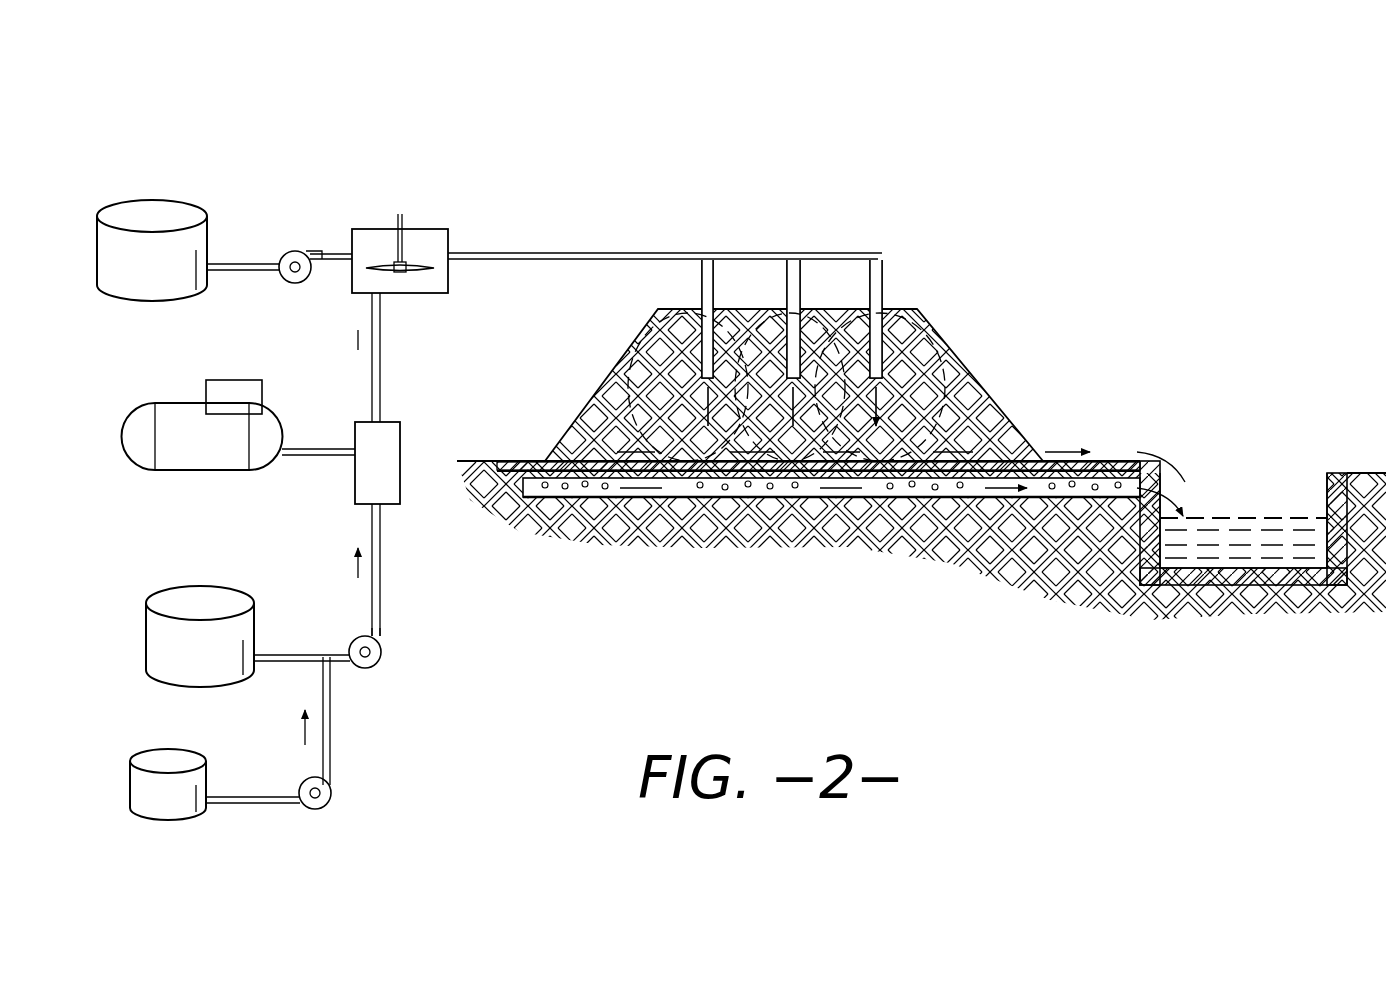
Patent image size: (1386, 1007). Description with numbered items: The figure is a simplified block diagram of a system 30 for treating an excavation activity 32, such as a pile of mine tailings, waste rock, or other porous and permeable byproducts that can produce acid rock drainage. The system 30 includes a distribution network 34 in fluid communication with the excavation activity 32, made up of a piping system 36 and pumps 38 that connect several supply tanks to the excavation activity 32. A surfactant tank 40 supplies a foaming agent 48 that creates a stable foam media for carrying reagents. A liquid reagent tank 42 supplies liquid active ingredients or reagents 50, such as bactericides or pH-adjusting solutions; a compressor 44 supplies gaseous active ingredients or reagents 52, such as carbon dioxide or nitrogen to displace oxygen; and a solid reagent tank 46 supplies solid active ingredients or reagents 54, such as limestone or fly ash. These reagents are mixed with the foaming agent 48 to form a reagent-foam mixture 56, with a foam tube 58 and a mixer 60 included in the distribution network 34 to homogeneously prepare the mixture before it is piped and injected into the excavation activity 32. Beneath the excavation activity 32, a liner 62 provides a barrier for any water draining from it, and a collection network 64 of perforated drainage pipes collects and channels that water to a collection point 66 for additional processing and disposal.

The system 30 is at (262, 127).
The excavation activity 32 is at (992, 366).
The distribution network 34 is at (430, 590).
The piping system 36 is at (335, 705).
The pump 38 is at (383, 656).
The surfactant tank 40 is at (125, 785).
The liquid reagent tank 42 is at (145, 625).
The compressor 44 is at (122, 430).
The solid reagent tank 46 is at (166, 200).
The foaming agent 48 is at (272, 776).
The liquid active ingredients or reagents 50 is at (324, 633).
The gaseous active ingredients or reagents 52 is at (334, 427).
The solid active ingredients or reagents 54 is at (290, 232).
The reagent-foam mixture 56 is at (760, 236).
The foam tube 58 is at (400, 442).
The mixer 60 is at (413, 244).
The liner 62 is at (500, 472).
The collection network 64 is at (773, 503).
The collection point 66 is at (1243, 484).